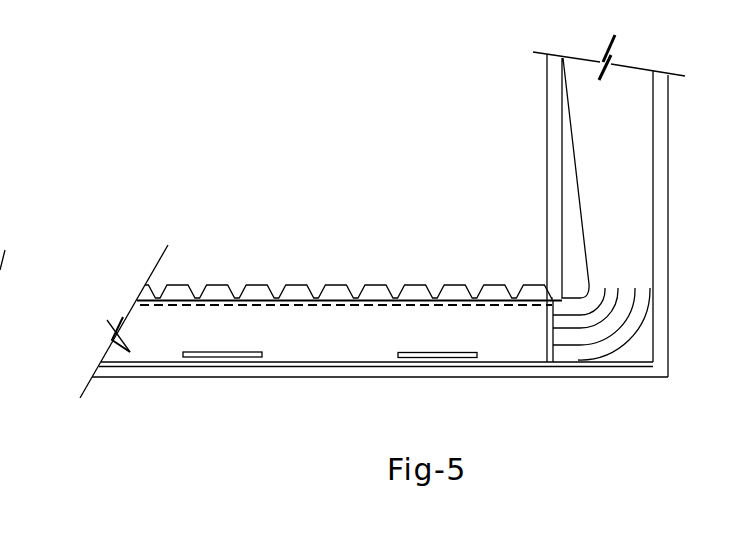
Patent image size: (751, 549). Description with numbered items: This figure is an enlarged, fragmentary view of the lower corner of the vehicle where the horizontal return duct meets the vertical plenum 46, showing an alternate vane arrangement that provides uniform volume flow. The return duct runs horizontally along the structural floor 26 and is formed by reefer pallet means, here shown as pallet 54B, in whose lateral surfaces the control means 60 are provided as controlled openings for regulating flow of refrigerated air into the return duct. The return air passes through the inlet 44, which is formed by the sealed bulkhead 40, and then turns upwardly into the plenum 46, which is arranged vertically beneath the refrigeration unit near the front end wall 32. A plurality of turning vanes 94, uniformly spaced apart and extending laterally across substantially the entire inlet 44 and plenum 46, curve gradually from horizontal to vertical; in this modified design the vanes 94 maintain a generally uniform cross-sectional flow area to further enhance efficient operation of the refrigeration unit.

The structural floor 26 is at (442, 377).
The front end wall 32 is at (670, 250).
The bulkhead 40 is at (547, 125).
The inlet 44 is at (543, 337).
The plenum 46 is at (622, 157).
The tray 54B is at (345, 348).
The control means 60 is at (218, 357).
The turning vanes 94 is at (605, 353).